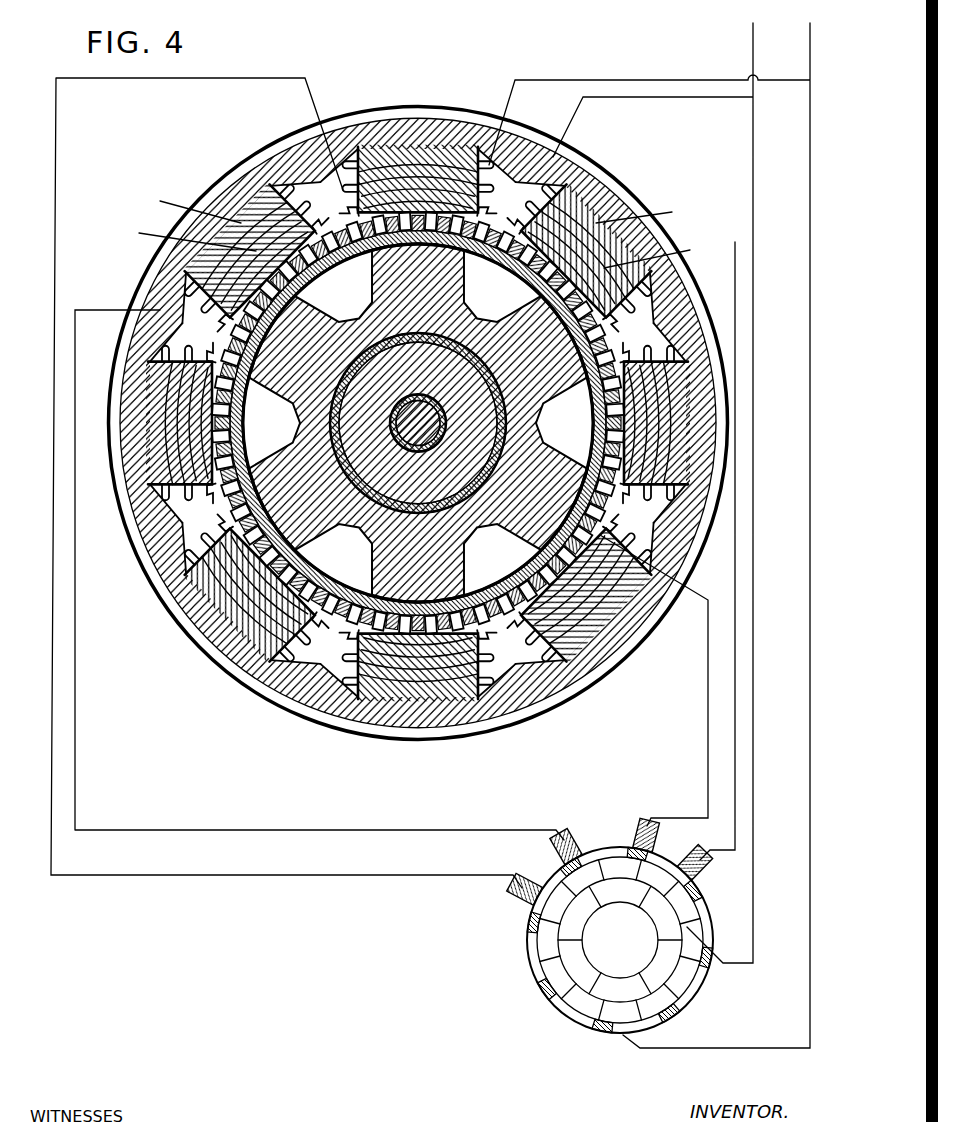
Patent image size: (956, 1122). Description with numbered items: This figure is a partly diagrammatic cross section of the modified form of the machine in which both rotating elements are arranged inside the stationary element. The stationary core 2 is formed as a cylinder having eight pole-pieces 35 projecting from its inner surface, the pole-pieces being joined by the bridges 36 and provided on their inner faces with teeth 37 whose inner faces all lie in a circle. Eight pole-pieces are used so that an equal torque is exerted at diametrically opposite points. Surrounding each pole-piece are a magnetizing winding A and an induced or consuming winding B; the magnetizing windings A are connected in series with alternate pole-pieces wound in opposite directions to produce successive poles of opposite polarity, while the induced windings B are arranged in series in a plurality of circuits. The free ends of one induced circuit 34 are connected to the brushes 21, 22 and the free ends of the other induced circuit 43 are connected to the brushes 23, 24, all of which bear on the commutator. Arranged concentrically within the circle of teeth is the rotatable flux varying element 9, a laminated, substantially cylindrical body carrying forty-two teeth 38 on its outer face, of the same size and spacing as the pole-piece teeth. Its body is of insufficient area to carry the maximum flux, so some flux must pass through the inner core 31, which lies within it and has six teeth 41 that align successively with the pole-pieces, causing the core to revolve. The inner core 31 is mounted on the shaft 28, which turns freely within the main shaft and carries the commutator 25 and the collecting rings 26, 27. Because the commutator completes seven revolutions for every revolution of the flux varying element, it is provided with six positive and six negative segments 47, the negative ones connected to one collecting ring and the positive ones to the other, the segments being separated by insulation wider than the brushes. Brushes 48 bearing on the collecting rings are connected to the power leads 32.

The stationary core 2 is at (346, 726).
The flux varying element 9 is at (503, 263).
The brush 21 is at (568, 846).
The brush 22 is at (527, 899).
The brush 23 is at (701, 874).
The brush 24 is at (643, 828).
The commutator 25 is at (620, 940).
The collecting ring 26 is at (625, 978).
The collecting ring 27 is at (636, 968).
The shaft 28 is at (429, 426).
The inner core 31 is at (352, 487).
The power leads 32 is at (810, 240).
The induced circuit 34 is at (265, 875).
The pole-piece 35 is at (419, 150).
The bridge 36 is at (520, 162).
The teeth 37 is at (331, 236).
The teeth 38 is at (353, 258).
The teeth 41 is at (548, 376).
The induced circuit 43 is at (735, 724).
The commutator segment 47 is at (706, 916).
The brush 48 is at (579, 1023).
The magnetizing winding A is at (413, 205).
The induced winding B is at (411, 243).